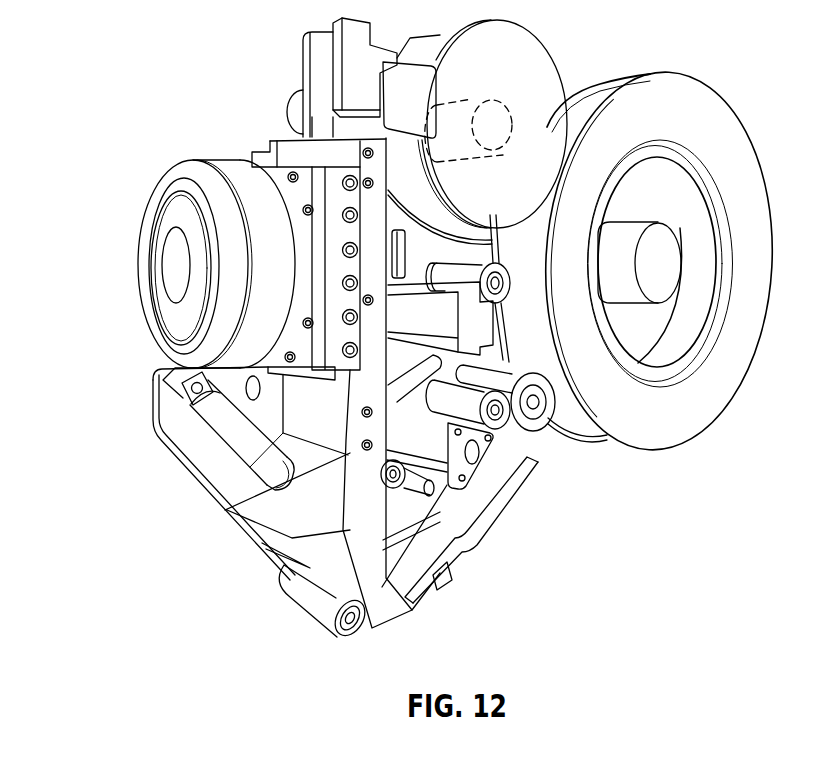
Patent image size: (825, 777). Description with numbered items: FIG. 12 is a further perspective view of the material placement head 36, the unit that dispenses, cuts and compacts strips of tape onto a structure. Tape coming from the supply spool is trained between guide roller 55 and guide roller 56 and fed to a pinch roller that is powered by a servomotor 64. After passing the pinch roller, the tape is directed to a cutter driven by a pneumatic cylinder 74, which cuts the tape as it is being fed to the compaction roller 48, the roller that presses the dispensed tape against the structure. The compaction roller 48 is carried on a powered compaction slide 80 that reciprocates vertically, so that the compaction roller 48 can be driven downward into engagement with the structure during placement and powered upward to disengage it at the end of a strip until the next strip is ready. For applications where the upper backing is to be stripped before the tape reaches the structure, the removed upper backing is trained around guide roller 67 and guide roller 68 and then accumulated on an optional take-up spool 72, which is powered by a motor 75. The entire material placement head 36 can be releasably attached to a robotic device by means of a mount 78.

The material placement head 36 is at (146, 135).
The compaction roller 48 is at (303, 598).
The guide roller 55 is at (495, 428).
The guide roller 56 is at (540, 420).
The servomotor 64 is at (693, 413).
The guide roller 67 is at (395, 488).
The guide roller 68 is at (510, 283).
The take-up spool 72 is at (518, 58).
The pneumatic cylinder 74 is at (240, 435).
The motor 75 is at (352, 63).
The mount 78 is at (173, 262).
The powered compaction slide 80 is at (358, 157).